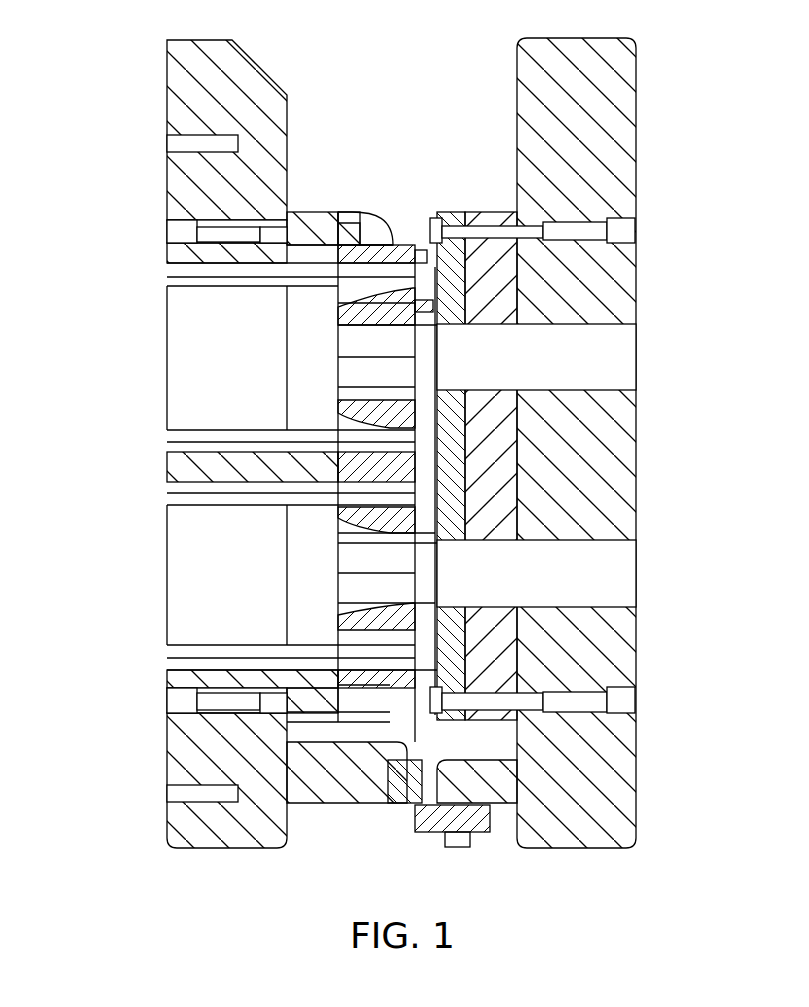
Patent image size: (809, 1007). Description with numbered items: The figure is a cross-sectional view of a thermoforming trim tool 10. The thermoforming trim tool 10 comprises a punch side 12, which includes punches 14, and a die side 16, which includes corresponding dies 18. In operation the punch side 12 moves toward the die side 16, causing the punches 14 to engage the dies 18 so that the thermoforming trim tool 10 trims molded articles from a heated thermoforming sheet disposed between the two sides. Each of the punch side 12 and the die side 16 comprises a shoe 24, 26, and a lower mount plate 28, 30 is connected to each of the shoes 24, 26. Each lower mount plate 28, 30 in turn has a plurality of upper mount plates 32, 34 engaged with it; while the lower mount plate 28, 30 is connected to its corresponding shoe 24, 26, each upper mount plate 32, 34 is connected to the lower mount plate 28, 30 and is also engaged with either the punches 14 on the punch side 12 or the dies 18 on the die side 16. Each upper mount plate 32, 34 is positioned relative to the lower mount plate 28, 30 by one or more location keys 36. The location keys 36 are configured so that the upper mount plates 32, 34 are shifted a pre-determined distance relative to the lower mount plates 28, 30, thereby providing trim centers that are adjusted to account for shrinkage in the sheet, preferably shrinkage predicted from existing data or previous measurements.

The thermoforming trim tool 10 is at (423, 470).
The punch side 12 is at (576, 443).
The punches 14 is at (463, 657).
The die side 16 is at (292, 477).
The dies 18 is at (405, 688).
The shoe 24 is at (628, 805).
The shoe 26 is at (205, 848).
The lower mount plate 28 is at (520, 740).
The lower mount plate 30 is at (312, 215).
The upper mount plate 32 is at (452, 213).
The upper mount plate 34 is at (348, 215).
The location keys 36 is at (320, 232).